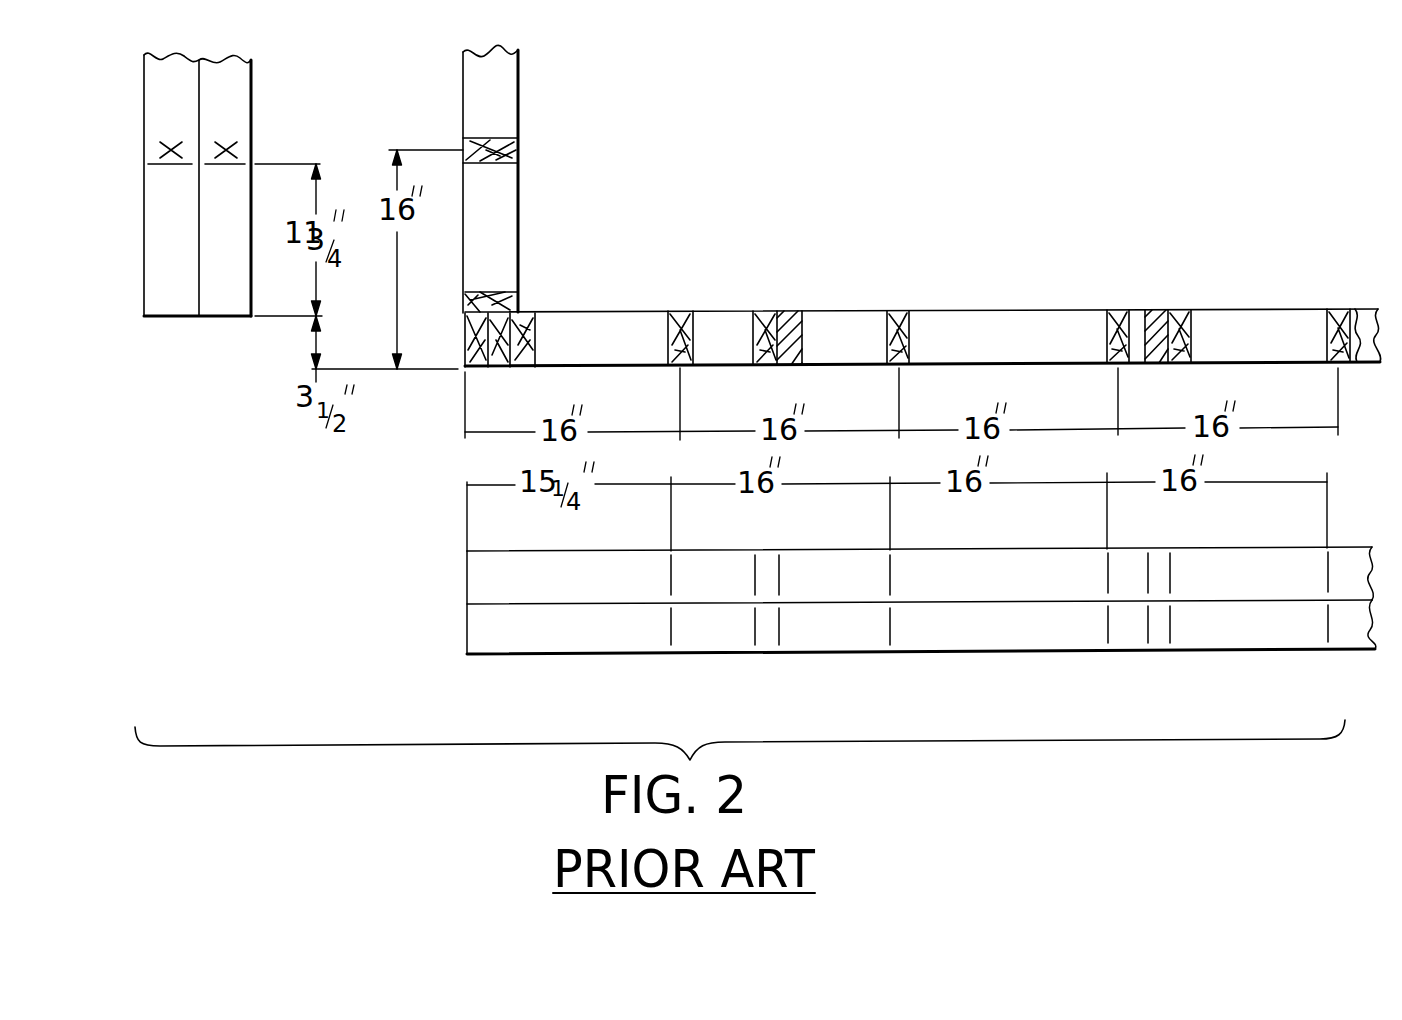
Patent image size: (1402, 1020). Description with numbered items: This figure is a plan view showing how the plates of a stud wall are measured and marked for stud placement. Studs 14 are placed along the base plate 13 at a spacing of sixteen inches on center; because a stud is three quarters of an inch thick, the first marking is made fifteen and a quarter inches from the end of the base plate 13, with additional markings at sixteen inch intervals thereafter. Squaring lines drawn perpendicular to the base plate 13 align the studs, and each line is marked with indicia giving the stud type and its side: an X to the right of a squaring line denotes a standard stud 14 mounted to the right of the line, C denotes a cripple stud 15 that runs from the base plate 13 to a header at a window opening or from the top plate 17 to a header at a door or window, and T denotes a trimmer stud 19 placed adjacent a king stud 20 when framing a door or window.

The base plate 13 is at (1002, 330).
The standard stud 14 is at (520, 140).
The cripple stud 15 is at (898, 311).
The top plate 17 is at (982, 623).
The trimmer stud 19 is at (793, 311).
The king stud 20 is at (765, 311).